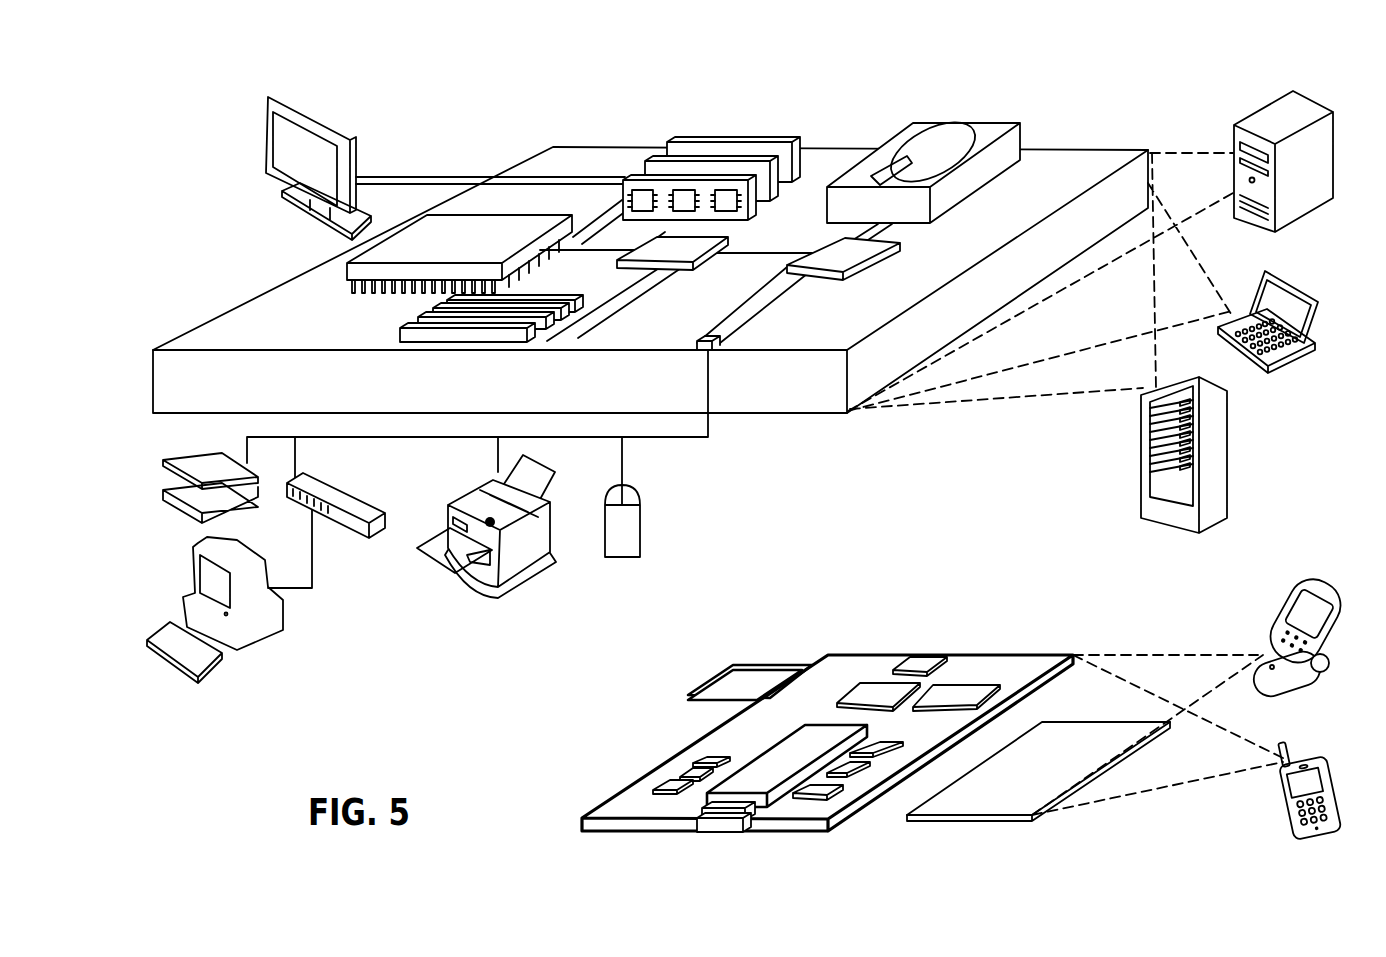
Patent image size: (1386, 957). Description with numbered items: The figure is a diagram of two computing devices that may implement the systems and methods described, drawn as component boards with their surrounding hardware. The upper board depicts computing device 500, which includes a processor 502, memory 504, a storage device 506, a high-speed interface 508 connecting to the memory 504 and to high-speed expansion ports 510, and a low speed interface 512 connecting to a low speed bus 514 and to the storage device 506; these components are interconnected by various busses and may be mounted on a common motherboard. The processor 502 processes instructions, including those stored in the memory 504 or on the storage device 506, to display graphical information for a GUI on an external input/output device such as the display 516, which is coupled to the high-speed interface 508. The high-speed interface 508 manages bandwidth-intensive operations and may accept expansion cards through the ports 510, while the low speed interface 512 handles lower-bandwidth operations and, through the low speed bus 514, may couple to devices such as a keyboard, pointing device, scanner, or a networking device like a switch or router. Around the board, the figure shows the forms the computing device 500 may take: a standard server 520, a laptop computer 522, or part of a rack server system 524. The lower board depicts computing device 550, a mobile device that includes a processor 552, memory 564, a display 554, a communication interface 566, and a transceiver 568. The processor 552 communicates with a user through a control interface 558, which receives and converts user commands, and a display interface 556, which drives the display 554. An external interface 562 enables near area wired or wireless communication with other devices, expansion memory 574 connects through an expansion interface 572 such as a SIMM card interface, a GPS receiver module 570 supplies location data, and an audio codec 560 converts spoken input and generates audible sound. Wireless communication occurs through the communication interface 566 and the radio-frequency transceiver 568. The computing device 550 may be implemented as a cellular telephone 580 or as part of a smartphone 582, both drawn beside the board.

The computing device 500 is at (477, 123).
The processor 502 is at (309, 275).
The memory 504 is at (672, 137).
The storage device 506 is at (918, 134).
The high-speed interface 508 is at (634, 256).
The high-speed expansion ports 510 is at (420, 324).
The low speed interface 512 is at (842, 254).
The low speed bus 514 is at (712, 352).
The display 516 is at (264, 101).
The standard server 520 is at (1219, 137).
The laptop computer 522 is at (1264, 271).
The rack server system 524 is at (1138, 485).
The computing device 550 is at (800, 615).
The processor 552 is at (750, 828).
The display 554 is at (1040, 820).
The display interface 556 is at (846, 804).
The control interface 558 is at (873, 768).
The audio codec 560 is at (940, 801).
The external interface 562 is at (722, 821).
The memory 564 is at (653, 790).
The communication interface 566 is at (880, 690).
The transceiver 568 is at (958, 693).
The GPS receiver module 570 is at (923, 655).
The expansion interface 572 is at (797, 669).
The expansion memory 574 is at (715, 671).
The cellular telephone 580 is at (1300, 598).
The smartphone 582 is at (1292, 738).